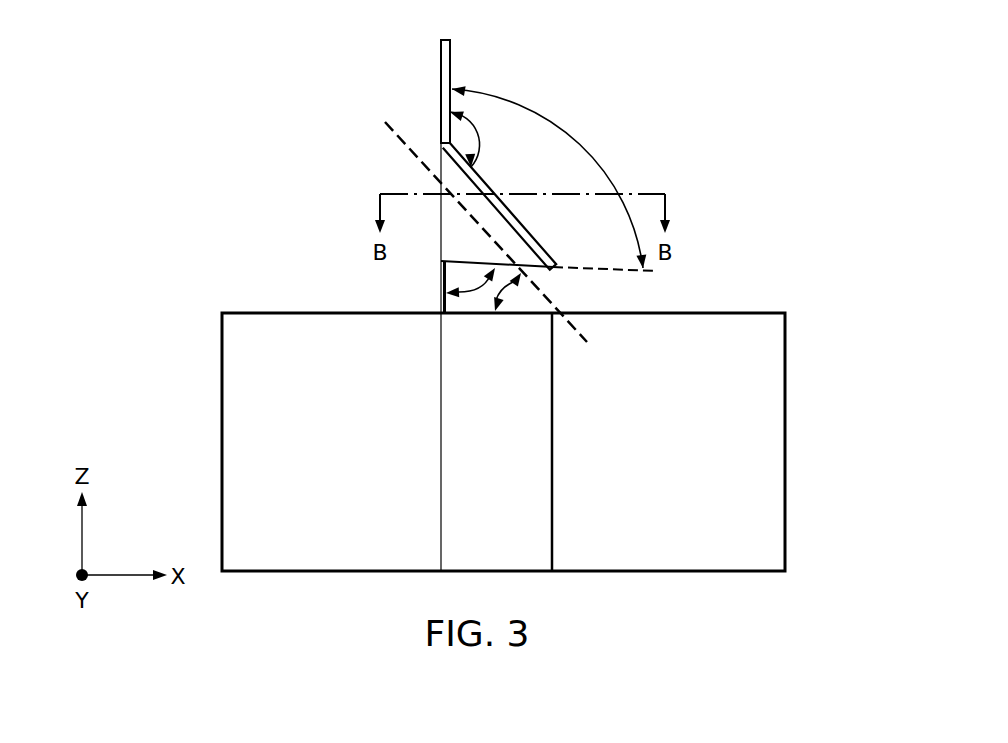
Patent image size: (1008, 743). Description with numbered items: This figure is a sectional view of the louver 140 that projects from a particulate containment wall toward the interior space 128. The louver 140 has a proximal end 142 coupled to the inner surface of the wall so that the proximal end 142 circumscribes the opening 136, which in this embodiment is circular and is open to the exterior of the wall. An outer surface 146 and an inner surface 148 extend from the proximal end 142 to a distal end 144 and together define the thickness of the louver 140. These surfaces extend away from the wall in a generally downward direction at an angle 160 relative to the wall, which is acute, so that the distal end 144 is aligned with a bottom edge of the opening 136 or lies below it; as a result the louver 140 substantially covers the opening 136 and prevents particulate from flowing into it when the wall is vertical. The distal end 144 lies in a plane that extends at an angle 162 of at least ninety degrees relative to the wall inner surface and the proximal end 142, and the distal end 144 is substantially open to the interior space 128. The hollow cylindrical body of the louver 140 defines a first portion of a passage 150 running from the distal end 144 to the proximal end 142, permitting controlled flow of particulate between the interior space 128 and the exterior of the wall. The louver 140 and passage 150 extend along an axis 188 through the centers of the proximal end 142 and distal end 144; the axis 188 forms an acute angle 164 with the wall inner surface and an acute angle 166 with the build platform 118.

The build platform 118 is at (735, 312).
The interior space 128 is at (710, 100).
The opening 136 is at (441, 272).
The louver 140 is at (527, 73).
The proximal end 142 is at (442, 144).
The distal end 144 is at (634, 273).
The outer surface 146 is at (528, 230).
The inner surface 148 is at (532, 268).
The passage 150 is at (450, 166).
The angle 160 is at (466, 120).
The angle 162 is at (570, 142).
The angle 164 is at (479, 294).
The angle 166 is at (506, 300).
The axis 188 is at (408, 153).